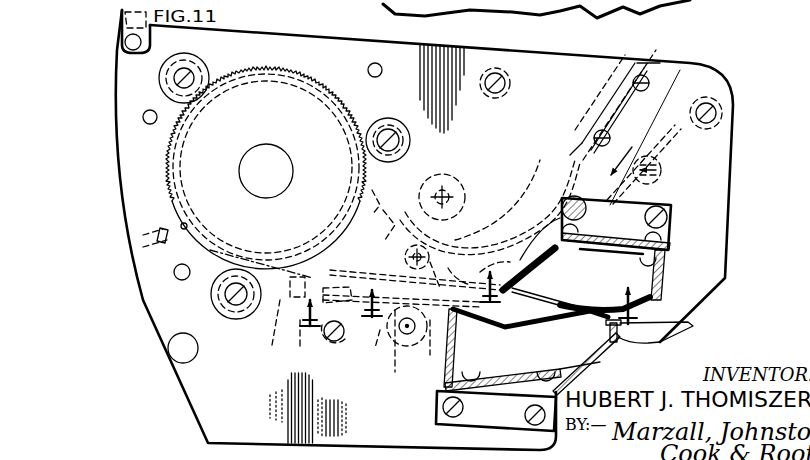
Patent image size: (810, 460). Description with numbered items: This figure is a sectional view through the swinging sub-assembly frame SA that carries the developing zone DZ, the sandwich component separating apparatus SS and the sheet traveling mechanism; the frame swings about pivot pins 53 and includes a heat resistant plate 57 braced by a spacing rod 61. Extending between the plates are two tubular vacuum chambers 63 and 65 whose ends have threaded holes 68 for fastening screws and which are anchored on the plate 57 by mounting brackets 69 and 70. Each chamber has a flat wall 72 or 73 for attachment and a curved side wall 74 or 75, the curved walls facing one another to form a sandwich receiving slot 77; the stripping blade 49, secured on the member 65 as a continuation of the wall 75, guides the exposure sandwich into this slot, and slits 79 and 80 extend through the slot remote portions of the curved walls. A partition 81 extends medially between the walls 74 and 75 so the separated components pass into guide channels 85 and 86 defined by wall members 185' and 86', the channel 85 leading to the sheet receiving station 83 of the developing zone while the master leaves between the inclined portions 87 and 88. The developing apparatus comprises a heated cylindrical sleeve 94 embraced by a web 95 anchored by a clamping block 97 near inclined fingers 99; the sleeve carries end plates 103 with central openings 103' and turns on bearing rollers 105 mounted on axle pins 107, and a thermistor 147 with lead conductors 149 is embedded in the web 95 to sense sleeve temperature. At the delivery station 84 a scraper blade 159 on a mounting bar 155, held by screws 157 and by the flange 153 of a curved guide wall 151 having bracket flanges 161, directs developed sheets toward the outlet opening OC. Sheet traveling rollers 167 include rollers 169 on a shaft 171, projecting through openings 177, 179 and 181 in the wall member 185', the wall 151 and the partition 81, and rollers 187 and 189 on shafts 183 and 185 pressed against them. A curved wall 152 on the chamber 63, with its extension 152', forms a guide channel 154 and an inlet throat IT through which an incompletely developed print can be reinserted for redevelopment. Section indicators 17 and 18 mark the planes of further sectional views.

The section line 17 is at (560, 298).
The section line 18 is at (342, 308).
The sandwich stripping blade 49 is at (690, 324).
The pivot pins 53 is at (716, 113).
The plate 57 is at (315, 47).
The bracing and spacing rod 61 is at (511, 85).
The vacuum chamber 63 is at (664, 280).
The vacuum chamber 65 is at (590, 364).
The holes 68 is at (580, 238).
The mounting bracket 69 is at (642, 231).
The mounting bracket 70 is at (508, 421).
The flat wall 72 is at (600, 250).
The flat wall 73 is at (505, 385).
The curved side wall 74 is at (584, 305).
The curved side wall 75 is at (572, 362).
The sandwich receiving slot 77 is at (620, 340).
The slits 79 is at (543, 300).
The slits 80 is at (525, 328).
The partition 81 is at (467, 315).
The sheet receiving station 83 is at (314, 274).
The delivery station 84 is at (374, 193).
The guide channel 85 is at (496, 260).
The guide channel 86 is at (430, 349).
The wall member 86' is at (338, 346).
The inclined portion 87 is at (265, 323).
The inclined portion 88 is at (305, 348).
The sheet guiding and moving component 94 is at (271, 268).
The sheet guiding and moving component 95 is at (181, 133).
The clamping block 97 is at (272, 334).
The inclined fingers 99 is at (370, 349).
The end plates 103 is at (266, 162).
The central openings 103' is at (263, 152).
The bearing rollers 105 is at (196, 72).
The axle pins 107 is at (177, 78).
The thermistor 147 is at (190, 226).
The lead conductors 149 is at (162, 228).
The curved guide wall 151 is at (502, 222).
The curved and inclined wall 152 is at (544, 220).
The extension 152' is at (676, 168).
The offset strengthening flange 153 is at (347, 236).
The guide channel 154 is at (533, 258).
The transverse mounting bar 155 is at (358, 222).
The fastening screws 157 is at (364, 202).
The scraper blade 159 is at (366, 178).
The bracket flanges 161 is at (612, 120).
The sheet traveling rollers 167 is at (492, 188).
The rollers 169 is at (463, 235).
The shaft 171 is at (426, 230).
The openings 177 is at (404, 255).
The openings 179 is at (405, 216).
The openings 181 is at (438, 275).
The shaft 183 is at (443, 173).
The shaft 185 is at (380, 352).
The wall member 185' is at (466, 269).
The rollers 187 is at (465, 180).
The rollers 189 is at (408, 347).
The frame SA is at (148, 332).
The developing zone DZ is at (176, 183).
The outlet opening OC is at (652, 62).
The inlet throat IT is at (644, 152).
The sandwich component separating apparatus SS is at (672, 246).